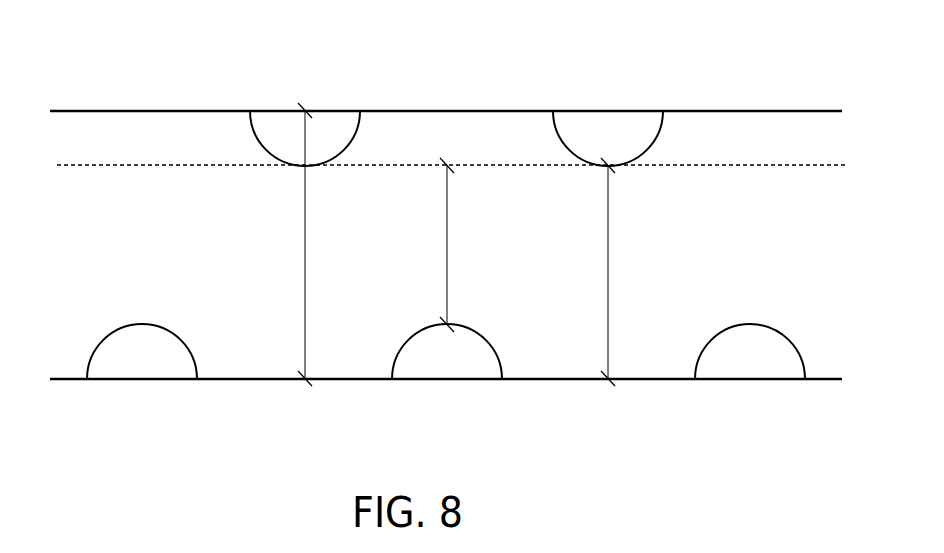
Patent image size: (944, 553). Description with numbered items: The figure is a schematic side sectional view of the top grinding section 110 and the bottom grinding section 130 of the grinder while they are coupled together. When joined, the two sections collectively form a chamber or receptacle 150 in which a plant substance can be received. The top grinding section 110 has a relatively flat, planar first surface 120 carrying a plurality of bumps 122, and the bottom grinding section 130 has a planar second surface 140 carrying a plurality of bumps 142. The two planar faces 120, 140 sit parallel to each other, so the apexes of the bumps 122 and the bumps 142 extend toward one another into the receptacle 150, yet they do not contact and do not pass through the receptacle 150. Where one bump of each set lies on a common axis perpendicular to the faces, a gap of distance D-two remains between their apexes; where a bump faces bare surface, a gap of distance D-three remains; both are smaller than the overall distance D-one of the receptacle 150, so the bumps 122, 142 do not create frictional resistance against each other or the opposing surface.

The top grinding section 110 is at (446, 145).
The first surface 120 is at (691, 118).
The bumps 122 is at (258, 156).
The bottom grinding section 130 is at (448, 374).
The second surface 140 is at (250, 373).
The bumps 142 is at (766, 357).
The receptacle 150 is at (753, 284).